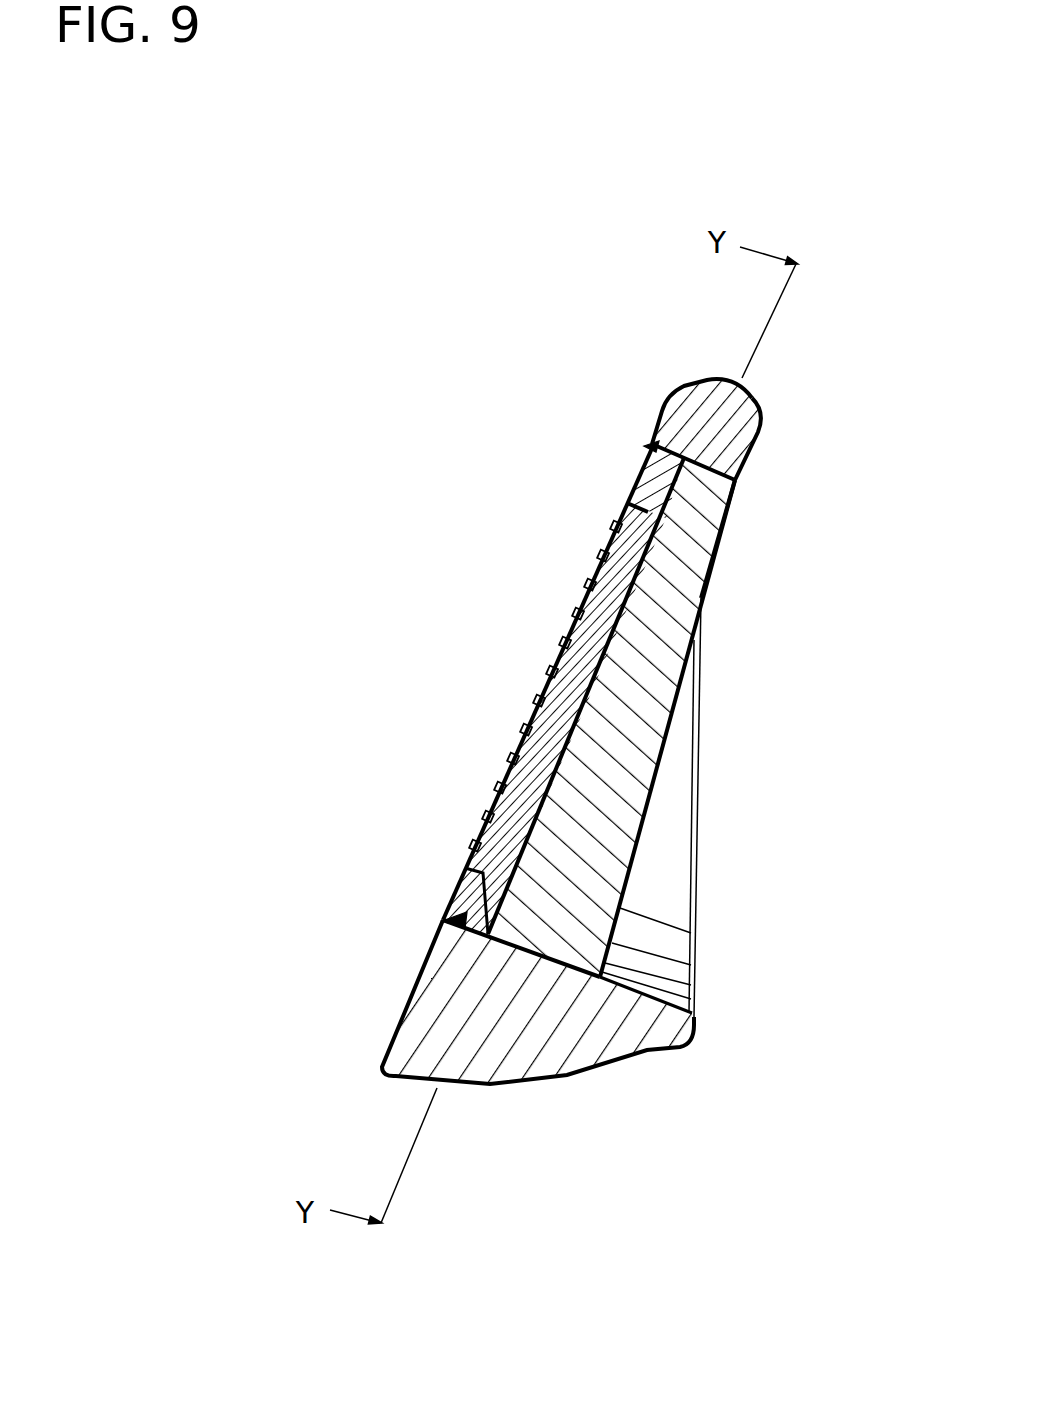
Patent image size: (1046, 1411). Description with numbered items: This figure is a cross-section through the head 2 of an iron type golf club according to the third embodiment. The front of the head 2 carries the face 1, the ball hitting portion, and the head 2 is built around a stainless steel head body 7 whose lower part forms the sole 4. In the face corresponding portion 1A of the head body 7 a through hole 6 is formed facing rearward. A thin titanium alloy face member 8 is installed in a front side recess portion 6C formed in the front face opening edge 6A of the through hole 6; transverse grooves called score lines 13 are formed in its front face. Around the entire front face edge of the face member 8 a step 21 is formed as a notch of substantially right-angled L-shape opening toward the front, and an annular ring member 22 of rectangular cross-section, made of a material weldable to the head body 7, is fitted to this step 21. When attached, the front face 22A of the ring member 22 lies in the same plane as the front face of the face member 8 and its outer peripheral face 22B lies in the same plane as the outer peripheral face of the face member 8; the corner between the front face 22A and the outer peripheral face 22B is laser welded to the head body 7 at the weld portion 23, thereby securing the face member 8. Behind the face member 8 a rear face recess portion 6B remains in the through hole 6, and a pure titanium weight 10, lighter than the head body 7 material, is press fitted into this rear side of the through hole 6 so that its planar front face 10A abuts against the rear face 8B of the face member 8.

The head 2 is at (583, 186).
The face 1 is at (494, 765).
The face corresponding portion 1A is at (538, 1002).
The sole 4 is at (527, 1087).
The through hole 6 is at (687, 381).
The front face opening edge 6A is at (650, 447).
The rear face recess portion 6B is at (755, 443).
The front side recess portion 6C is at (660, 412).
The head body 7 is at (648, 1046).
The face member 8 is at (583, 587).
The rear face 8B is at (577, 627).
The weight 10 is at (660, 735).
The front face 10A is at (615, 693).
The score lines 13 is at (537, 700).
The step 21 is at (615, 522).
The ring member 22 is at (361, 825).
The front face 22A is at (458, 882).
The outer peripheral face 22B is at (467, 923).
The weld portion 23 is at (441, 918).